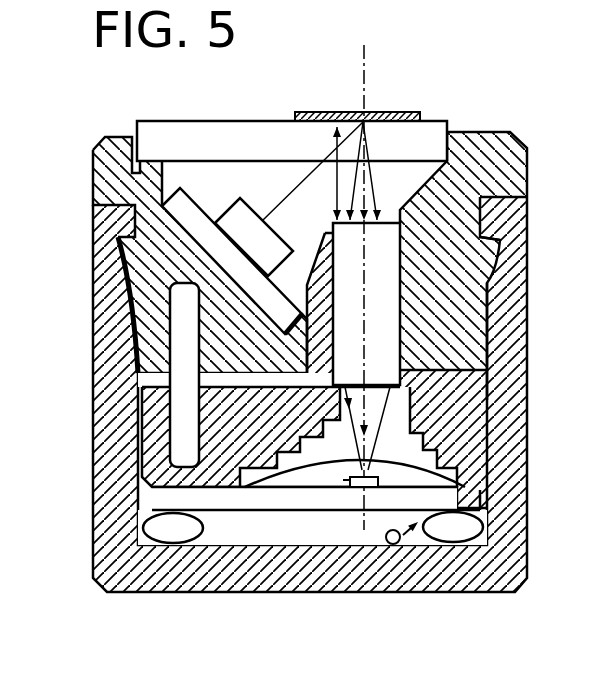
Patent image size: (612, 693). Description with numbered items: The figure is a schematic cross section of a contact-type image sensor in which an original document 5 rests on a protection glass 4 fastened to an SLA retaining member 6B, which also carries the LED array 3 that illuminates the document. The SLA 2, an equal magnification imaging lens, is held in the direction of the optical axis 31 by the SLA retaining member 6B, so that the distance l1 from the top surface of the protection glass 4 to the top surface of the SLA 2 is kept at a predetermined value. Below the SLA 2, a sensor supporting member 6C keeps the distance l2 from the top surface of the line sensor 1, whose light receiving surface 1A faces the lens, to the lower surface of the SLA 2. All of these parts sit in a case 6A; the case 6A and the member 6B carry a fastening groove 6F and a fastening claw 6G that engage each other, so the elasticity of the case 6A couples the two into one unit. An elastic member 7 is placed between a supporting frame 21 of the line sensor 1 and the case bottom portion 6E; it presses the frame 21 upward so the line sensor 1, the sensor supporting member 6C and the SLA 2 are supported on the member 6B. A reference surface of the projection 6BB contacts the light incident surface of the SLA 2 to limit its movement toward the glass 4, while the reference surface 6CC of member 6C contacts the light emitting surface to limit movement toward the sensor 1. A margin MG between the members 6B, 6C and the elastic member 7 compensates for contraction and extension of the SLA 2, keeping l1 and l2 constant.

The line sensor 1 is at (358, 487).
The light receiving surface 1A is at (440, 472).
The SLA 2 is at (388, 284).
The LED array 3 is at (222, 215).
The protection glass 4 is at (255, 136).
The original document 5 is at (415, 112).
The case 6A is at (520, 508).
The SLA retaining member 6B is at (520, 150).
The projection 6BB is at (400, 210).
The sensor supporting member 6C is at (527, 425).
The reference surface 6CC is at (527, 387).
The case bottom portion 6E is at (398, 548).
The fastening groove 6F is at (125, 283).
The fastening claw 6G is at (527, 241).
The elastic member 7 is at (175, 537).
The supporting frame 21 is at (241, 515).
The optical axis 31 is at (365, 62).
The margin MG is at (462, 384).
The distance l1 is at (333, 178).
The distance l2 is at (345, 400).